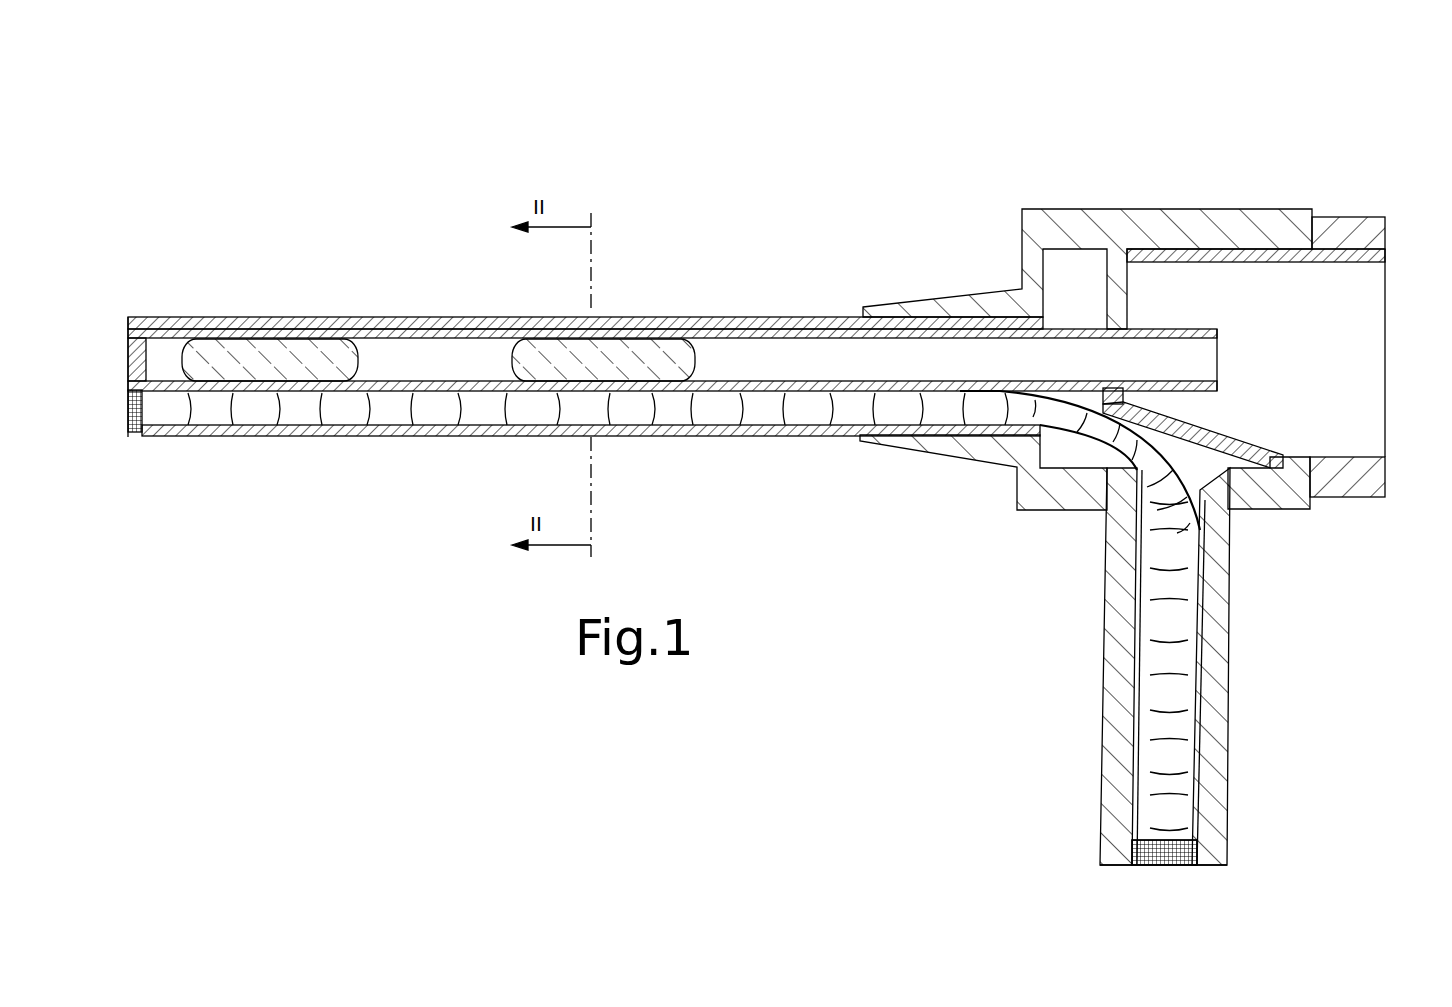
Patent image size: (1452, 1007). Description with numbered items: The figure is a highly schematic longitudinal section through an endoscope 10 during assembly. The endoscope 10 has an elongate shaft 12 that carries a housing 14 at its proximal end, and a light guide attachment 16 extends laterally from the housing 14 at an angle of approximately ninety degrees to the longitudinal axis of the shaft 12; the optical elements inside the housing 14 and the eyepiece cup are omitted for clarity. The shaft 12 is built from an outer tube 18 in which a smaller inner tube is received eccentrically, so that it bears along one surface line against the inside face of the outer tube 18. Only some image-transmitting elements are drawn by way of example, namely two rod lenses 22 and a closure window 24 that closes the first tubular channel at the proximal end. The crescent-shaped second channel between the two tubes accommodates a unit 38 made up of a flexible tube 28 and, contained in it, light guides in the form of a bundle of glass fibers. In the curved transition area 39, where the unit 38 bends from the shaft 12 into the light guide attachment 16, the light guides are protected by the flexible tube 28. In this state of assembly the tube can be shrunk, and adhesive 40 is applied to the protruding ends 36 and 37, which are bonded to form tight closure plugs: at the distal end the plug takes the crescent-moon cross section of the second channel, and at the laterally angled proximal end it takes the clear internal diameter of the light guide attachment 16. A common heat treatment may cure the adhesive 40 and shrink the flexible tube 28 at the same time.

The endoscope 10 is at (969, 136).
The shaft 12 is at (726, 296).
The housing 14 is at (1224, 182).
The light guide attachment 16 is at (1212, 655).
The outer tube 18 is at (440, 317).
The rod lenses 22 is at (258, 350).
The closure window 24 is at (128, 350).
The flexible tube 28 is at (253, 417).
The protruding end 36 is at (133, 438).
The protruding end 37 is at (1190, 847).
The unit 38 is at (775, 412).
The curved transition area 39 is at (1180, 421).
The adhesive 40 is at (127, 408).